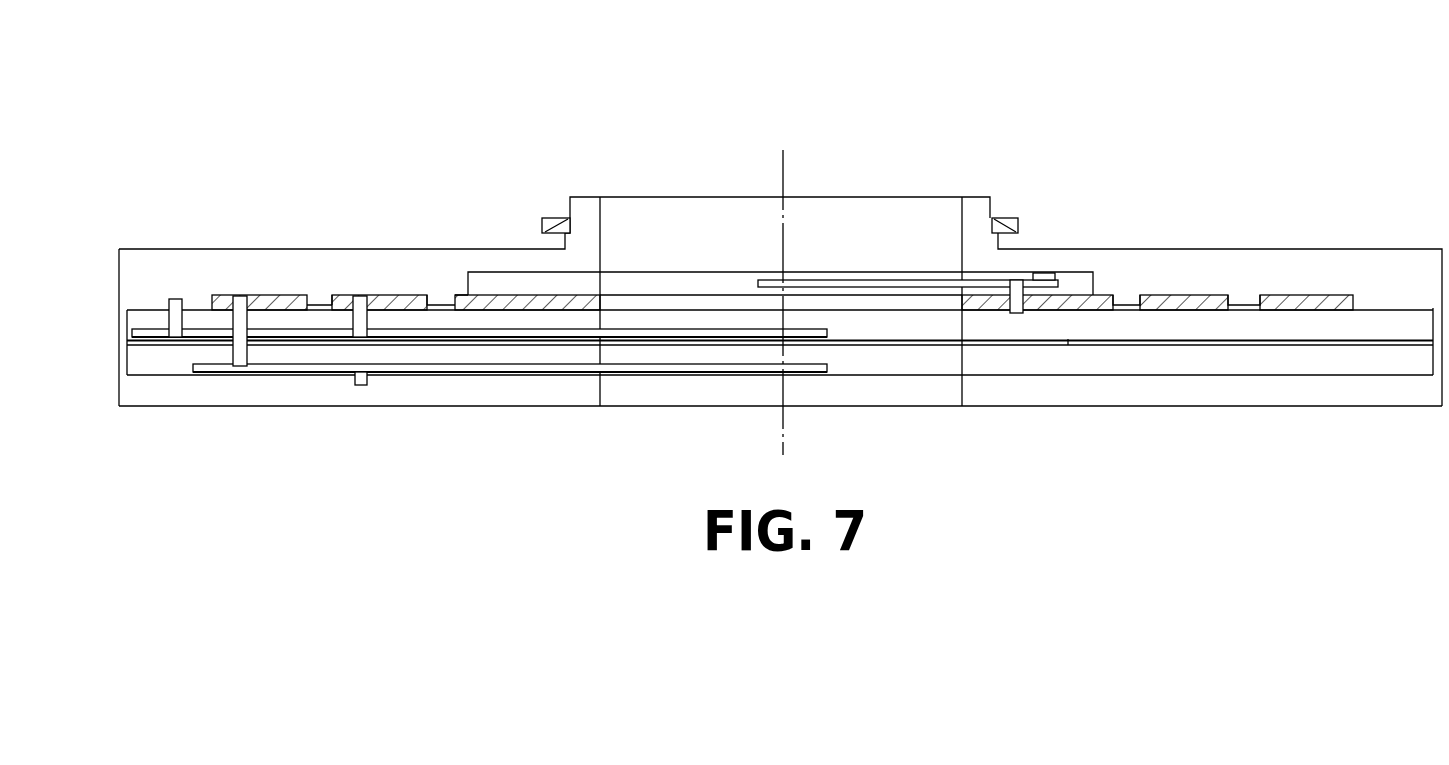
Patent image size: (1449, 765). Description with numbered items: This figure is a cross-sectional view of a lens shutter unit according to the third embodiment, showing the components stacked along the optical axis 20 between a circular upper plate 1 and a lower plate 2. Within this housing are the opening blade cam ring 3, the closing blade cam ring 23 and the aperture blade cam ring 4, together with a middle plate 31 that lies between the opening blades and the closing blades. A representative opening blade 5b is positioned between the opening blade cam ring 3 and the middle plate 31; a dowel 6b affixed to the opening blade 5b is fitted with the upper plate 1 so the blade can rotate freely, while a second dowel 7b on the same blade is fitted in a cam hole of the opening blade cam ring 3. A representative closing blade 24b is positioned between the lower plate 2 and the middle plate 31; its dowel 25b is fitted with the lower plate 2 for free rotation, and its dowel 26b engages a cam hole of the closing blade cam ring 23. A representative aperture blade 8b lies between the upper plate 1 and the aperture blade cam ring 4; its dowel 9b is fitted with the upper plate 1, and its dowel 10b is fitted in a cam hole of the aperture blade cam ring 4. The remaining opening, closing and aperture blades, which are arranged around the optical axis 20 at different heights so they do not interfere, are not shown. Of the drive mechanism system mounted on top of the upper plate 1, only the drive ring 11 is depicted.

The upper plate 1 is at (1395, 278).
The lower plate 2 is at (1383, 392).
The opening blade cam ring 3 is at (1190, 295).
The aperture blade cam ring 4 is at (1080, 293).
The opening blade 5b is at (438, 330).
The dowel 6b is at (176, 299).
The dowel 7b is at (360, 296).
The aperture blade 8b is at (935, 275).
The dowel 9b is at (1047, 273).
The dowel 10b is at (1018, 277).
The drive ring 11 is at (543, 228).
The optical axis 20 is at (790, 162).
The closing blade cam ring 23 is at (1305, 295).
The closing blade 24b is at (500, 373).
The dowel 25b is at (364, 385).
The dowel 26b is at (240, 366).
The middle plate 31 is at (1322, 342).